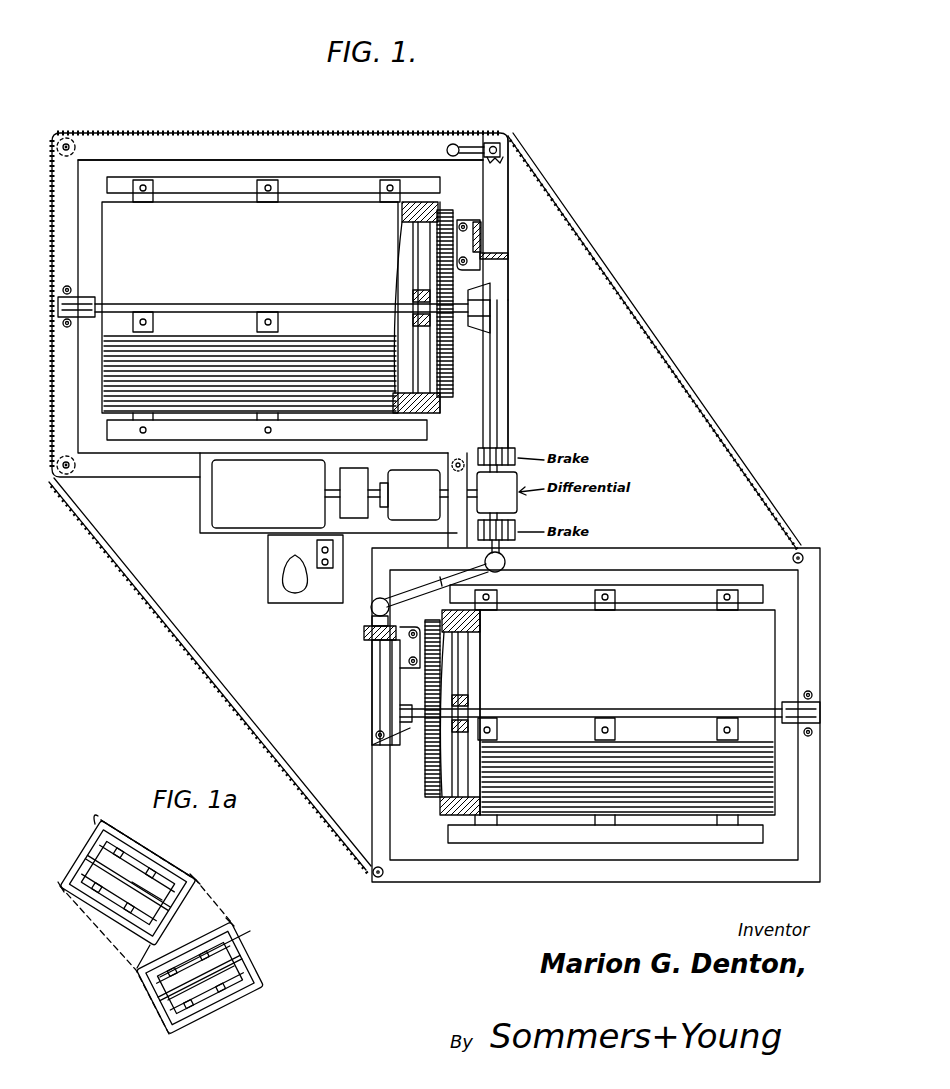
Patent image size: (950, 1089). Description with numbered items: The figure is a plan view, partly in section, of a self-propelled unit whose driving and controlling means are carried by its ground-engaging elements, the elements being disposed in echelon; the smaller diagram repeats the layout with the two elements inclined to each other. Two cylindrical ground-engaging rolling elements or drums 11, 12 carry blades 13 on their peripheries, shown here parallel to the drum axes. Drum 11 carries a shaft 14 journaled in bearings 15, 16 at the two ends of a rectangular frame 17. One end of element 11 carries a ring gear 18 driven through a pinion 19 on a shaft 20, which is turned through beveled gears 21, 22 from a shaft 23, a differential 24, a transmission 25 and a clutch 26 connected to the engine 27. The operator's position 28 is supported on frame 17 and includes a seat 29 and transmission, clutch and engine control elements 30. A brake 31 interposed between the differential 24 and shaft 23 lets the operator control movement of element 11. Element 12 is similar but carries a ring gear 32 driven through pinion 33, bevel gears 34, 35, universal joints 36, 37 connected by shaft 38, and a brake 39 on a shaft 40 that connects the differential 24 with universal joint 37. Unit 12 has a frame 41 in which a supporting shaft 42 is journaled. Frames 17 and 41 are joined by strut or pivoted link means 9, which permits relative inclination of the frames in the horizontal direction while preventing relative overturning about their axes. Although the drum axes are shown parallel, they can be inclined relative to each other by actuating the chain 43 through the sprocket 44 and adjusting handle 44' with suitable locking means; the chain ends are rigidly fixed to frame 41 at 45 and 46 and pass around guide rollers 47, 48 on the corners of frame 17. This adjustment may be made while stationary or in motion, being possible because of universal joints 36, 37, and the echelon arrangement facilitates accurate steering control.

In FIG. 1, the strut or pivoted link means 9 is at (460, 530).
In FIG. 1, the cylindrical ground-engaging rolling element 11 is at (300, 215).
In FIG. 1a, the cylindrical ground-engaging rolling element 11 is at (105, 885).
In FIG. 1, the cylindrical ground-engaging rolling element 12 is at (660, 620).
In FIG. 1a, the cylindrical ground-engaging rolling element 12 is at (225, 985).
In FIG. 1, the blades 13 is at (225, 190).
In FIG. 1, the shaft 14 is at (405, 302).
In FIG. 1a, the shaft 14 is at (168, 903).
In FIG. 1, the bearing 15 is at (82, 305).
In FIG. 1, the bearing 16 is at (490, 308).
In FIG. 1, the rectangular frame 17 is at (195, 150).
In FIG. 1a, the rectangular frame 17 is at (152, 856).
In FIG. 1, the ring gear 18 is at (446, 384).
In FIG. 1, the pinion 19 is at (428, 240).
In FIG. 1, the shaft 20 is at (460, 230).
In FIG. 1, the beveled gear 21 is at (488, 246).
In FIG. 1, the beveled gear 22 is at (500, 258).
In FIG. 1, the shaft 23 is at (505, 386).
In FIG. 1, the differential 24 is at (490, 480).
In FIG. 1, the transmission 25 is at (398, 482).
In FIG. 1, the clutch 26 is at (352, 470).
In FIG. 1, the engine 27 is at (215, 505).
In FIG. 1, the operator's position 28 is at (265, 548).
In FIG. 1, the seat 29 is at (290, 585).
In FIG. 1, the control elements 30 is at (325, 568).
In FIG. 1, the brake 31 is at (512, 456).
In FIG. 1, the ring gear 32 is at (430, 782).
In FIG. 1, the pinion 33 is at (446, 652).
In FIG. 1, the bevel gear 34 is at (388, 667).
In FIG. 1, the bevel gear 35 is at (386, 643).
In FIG. 1, the universal joint 36 is at (372, 613).
In FIG. 1, the universal joint 37 is at (506, 562).
In FIG. 1, the shaft 38 is at (422, 590).
In FIG. 1, the brake 39 is at (516, 528).
In FIG. 1, the shaft 40 is at (498, 514).
In FIG. 1, the frame 41 is at (668, 565).
In FIG. 1a, the frame 41 is at (215, 1010).
In FIG. 1, the supporting shaft 42 is at (470, 712).
In FIG. 1a, the supporting shaft 42 is at (236, 961).
In FIG. 1, the chain 43 is at (630, 272).
In FIG. 1a, the chain 43 is at (214, 892).
In FIG. 1, the sprocket 44 is at (541, 218).
In FIG. 1a, the sprocket 44 is at (220, 857).
In FIG. 1, the adjusting handle 44' is at (470, 127).
In FIG. 1, the chain end connection 45 is at (800, 553).
In FIG. 1a, the chain end connection 45 is at (228, 922).
In FIG. 1, the chain end connection 46 is at (380, 878).
In FIG. 1, the guide roller 47 is at (72, 477).
In FIG. 1a, the guide roller 47 is at (62, 893).
In FIG. 1, the guide roller 48 is at (58, 133).
In FIG. 1a, the guide roller 48 is at (96, 822).